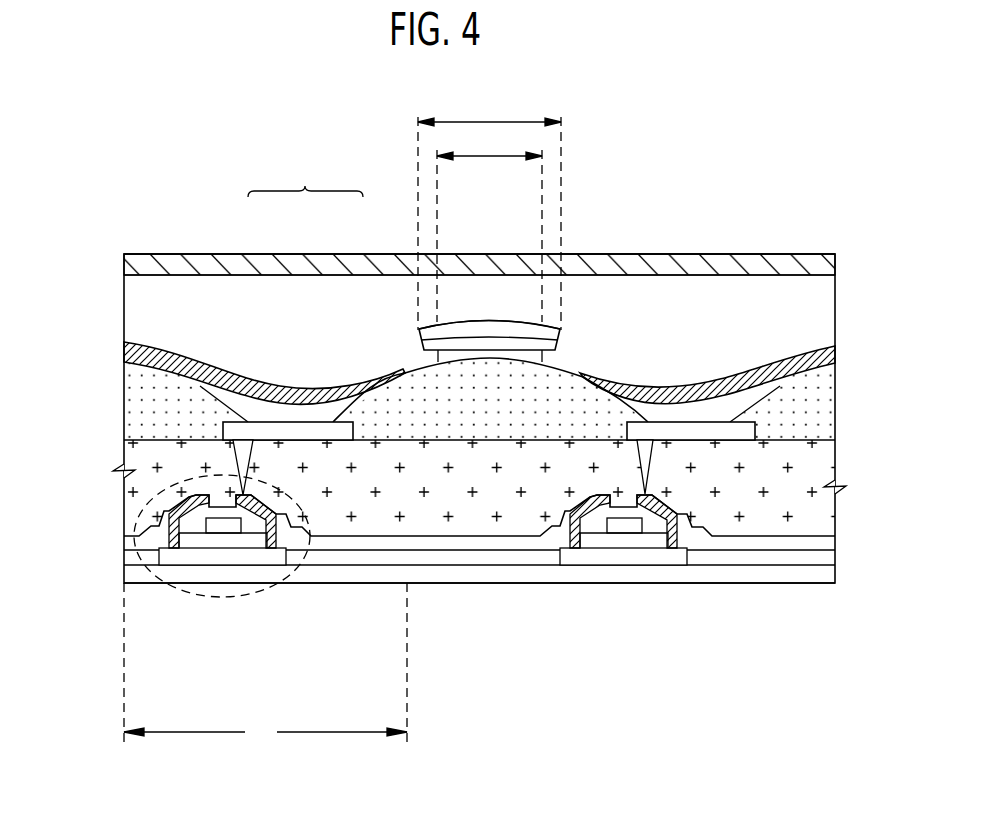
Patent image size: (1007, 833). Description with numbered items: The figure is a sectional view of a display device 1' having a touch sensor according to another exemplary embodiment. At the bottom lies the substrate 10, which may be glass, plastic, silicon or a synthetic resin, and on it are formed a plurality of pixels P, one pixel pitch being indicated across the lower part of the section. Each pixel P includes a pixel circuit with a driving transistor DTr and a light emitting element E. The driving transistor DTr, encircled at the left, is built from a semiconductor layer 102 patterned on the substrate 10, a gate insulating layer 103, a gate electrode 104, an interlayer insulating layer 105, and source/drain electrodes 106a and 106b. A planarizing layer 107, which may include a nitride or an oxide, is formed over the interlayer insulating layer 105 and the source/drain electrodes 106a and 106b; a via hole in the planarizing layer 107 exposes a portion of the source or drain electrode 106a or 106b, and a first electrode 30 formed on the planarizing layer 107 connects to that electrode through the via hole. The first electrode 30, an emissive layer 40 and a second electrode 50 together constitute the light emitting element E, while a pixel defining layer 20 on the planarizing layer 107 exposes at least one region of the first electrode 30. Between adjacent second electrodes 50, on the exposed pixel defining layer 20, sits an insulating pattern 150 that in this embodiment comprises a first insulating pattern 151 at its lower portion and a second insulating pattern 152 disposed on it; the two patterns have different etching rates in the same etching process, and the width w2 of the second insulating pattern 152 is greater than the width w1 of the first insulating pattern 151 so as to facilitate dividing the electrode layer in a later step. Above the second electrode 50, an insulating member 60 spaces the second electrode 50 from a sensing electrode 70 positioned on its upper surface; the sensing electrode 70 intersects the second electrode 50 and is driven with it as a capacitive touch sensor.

The display device 1' is at (479, 342).
The substrate 10 is at (125, 575).
The pixel defining layer 20 is at (473, 408).
The first electrode 30 is at (263, 428).
The emissive layer 40 is at (330, 404).
The second electrode 50 is at (302, 388).
The insulating member 60 is at (124, 298).
The sensing electrode 70 is at (124, 265).
The semiconductor layer 102 is at (208, 557).
The gate insulating layer 103 is at (140, 556).
The gate electrode 104 is at (223, 527).
The interlayer insulating layer 105 is at (140, 536).
The source electrode 106a is at (183, 510).
The drain electrode 106b is at (280, 513).
The planarizing layer 107 is at (123, 448).
The insulating pattern 150 is at (523, 206).
The first insulating pattern 151 is at (518, 350).
The second insulating pattern 152 is at (485, 330).
The driving transistor DTr is at (157, 492).
The light emitting element E is at (305, 178).
The width of the first insulating pattern w1 is at (489, 227).
The width of the second insulating pattern w2 is at (489, 214).
The pixel P is at (265, 666).